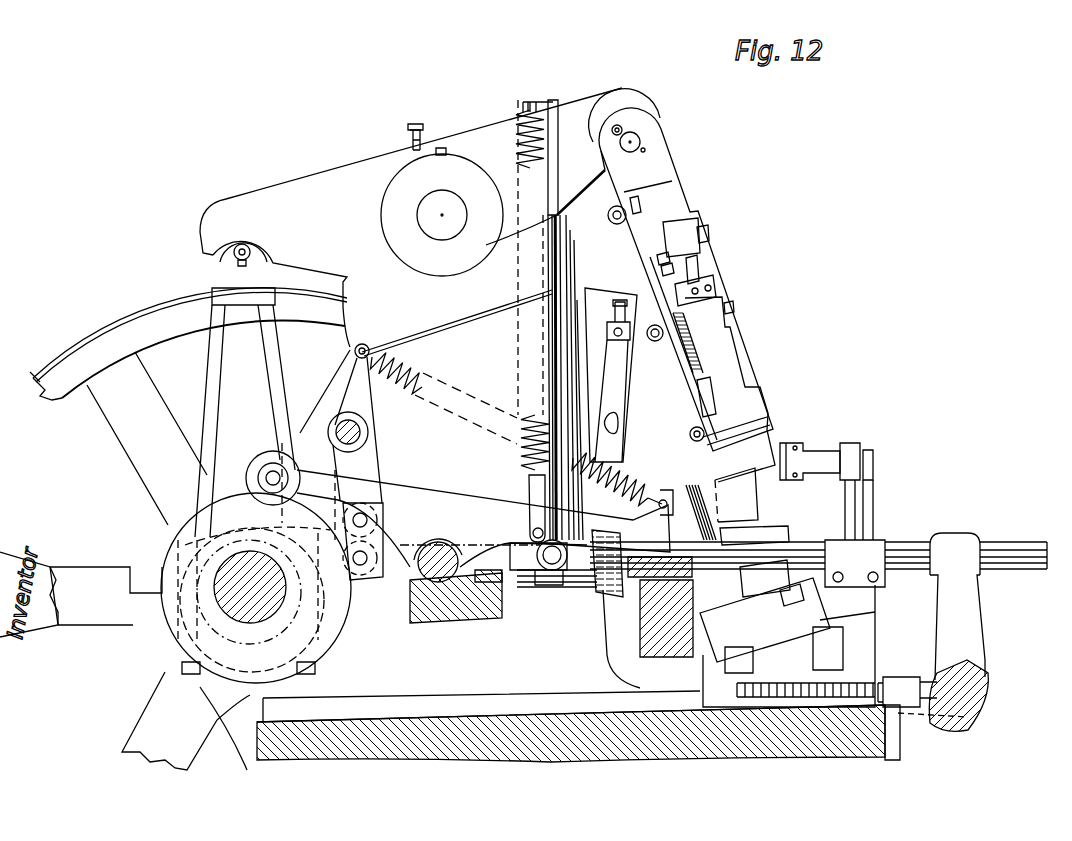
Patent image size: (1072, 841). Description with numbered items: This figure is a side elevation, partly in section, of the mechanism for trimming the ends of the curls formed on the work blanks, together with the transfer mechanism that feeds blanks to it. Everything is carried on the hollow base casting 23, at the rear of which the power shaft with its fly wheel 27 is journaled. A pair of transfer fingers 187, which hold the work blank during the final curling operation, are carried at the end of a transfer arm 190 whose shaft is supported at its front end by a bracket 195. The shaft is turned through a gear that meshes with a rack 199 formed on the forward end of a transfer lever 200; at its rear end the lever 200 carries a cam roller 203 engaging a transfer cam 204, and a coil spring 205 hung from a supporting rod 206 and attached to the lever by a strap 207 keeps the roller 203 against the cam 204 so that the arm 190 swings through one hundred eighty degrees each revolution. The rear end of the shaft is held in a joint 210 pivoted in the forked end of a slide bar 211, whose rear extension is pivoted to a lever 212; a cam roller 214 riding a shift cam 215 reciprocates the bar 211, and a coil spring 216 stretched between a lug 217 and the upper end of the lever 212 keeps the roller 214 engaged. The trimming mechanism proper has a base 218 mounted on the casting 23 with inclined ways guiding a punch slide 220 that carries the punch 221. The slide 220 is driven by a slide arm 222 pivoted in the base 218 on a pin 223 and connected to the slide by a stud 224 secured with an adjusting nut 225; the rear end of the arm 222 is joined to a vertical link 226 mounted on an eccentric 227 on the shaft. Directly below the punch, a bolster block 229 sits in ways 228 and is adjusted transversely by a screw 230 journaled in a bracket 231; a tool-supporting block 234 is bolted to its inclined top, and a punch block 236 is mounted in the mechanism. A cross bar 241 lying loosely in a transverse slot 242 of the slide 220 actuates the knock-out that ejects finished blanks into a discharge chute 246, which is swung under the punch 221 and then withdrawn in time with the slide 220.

The base casting 23 is at (400, 745).
The fly wheel 27 is at (62, 385).
The transfer fingers 187 is at (820, 452).
The transfer arm 190 is at (870, 507).
The bracket 195 is at (973, 627).
The rack 199 is at (605, 590).
The transfer lever 200 is at (427, 493).
The cam roller 203 is at (257, 460).
The transfer cam 204 is at (237, 688).
The coil spring 205 is at (517, 127).
The supporting rod 206 is at (542, 100).
The strap 207 is at (530, 493).
The joint 210 is at (548, 583).
The slide bar 211 is at (507, 565).
The lever 212 is at (373, 470).
The cam roller 214 is at (367, 582).
The shift cam 215 is at (170, 607).
The coil spring 216 is at (417, 363).
The lug 217 is at (662, 515).
The base 218 is at (357, 237).
The punch slide 220 is at (723, 348).
The punch 221 is at (742, 502).
The slide arm 222 is at (627, 90).
The pin 223 is at (437, 197).
The stud 224 is at (658, 162).
The adjusting nut 225 is at (712, 285).
The vertical link 226 is at (213, 342).
The eccentric 227 is at (248, 675).
The ways 228 is at (895, 750).
The bolster block 229 is at (867, 650).
The screw 230 is at (930, 680).
The bracket 231 is at (900, 710).
The tool-supporting block 234 is at (813, 618).
The punch block 236 is at (772, 580).
The cross bar 241 is at (712, 390).
The transverse slot 242 is at (715, 413).
The discharge chute 246 is at (768, 532).